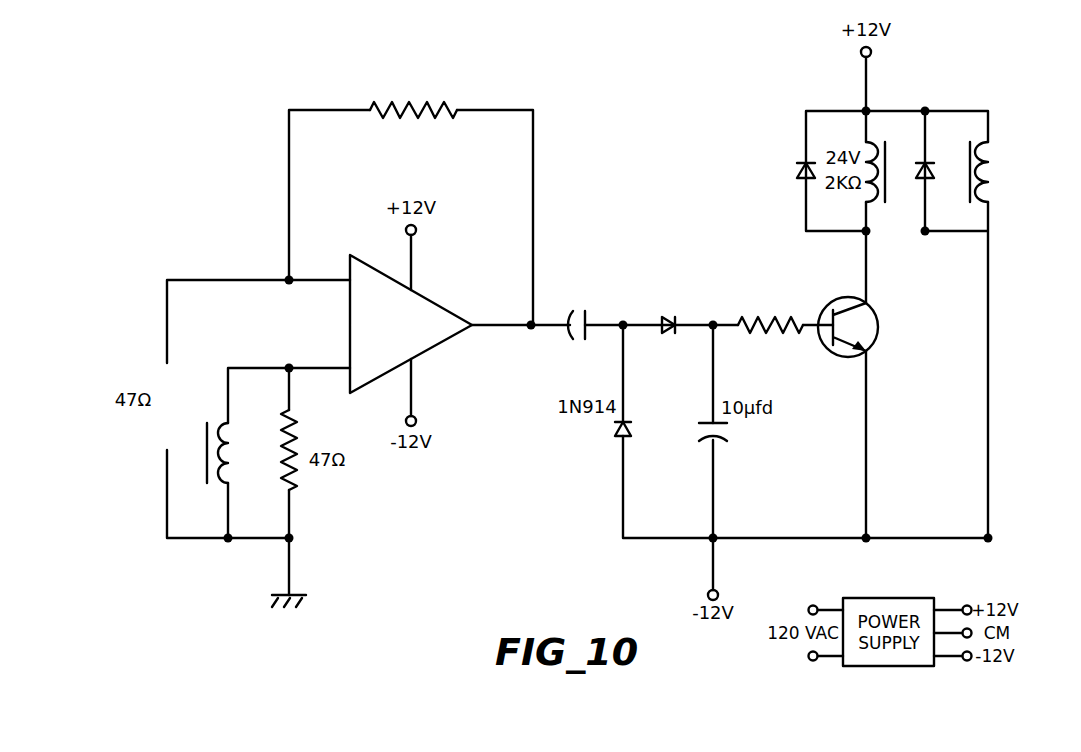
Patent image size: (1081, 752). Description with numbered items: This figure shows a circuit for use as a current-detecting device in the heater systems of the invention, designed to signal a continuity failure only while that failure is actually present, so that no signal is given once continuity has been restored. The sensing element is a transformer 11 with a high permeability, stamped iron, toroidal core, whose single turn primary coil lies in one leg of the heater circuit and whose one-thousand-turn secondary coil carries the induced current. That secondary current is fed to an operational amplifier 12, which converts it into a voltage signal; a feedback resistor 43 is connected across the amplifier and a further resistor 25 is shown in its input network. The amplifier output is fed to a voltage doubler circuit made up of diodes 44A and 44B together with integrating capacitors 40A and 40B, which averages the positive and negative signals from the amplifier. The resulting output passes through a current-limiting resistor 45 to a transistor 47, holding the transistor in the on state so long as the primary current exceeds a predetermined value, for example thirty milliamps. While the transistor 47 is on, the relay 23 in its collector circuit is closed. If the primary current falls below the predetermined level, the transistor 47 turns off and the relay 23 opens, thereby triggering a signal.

The transformer 11 is at (232, 470).
The operational amplifier 12 is at (432, 349).
The relay 23 is at (992, 205).
The resistor 25 is at (291, 492).
The integrating capacitor 40A is at (590, 335).
The integrating capacitor 40B is at (718, 440).
The feedback resistor 43 is at (424, 118).
The diode 44A is at (680, 333).
The diode 44B is at (619, 440).
The current-limiting resistor 45 is at (770, 335).
The transistor 47 is at (878, 340).